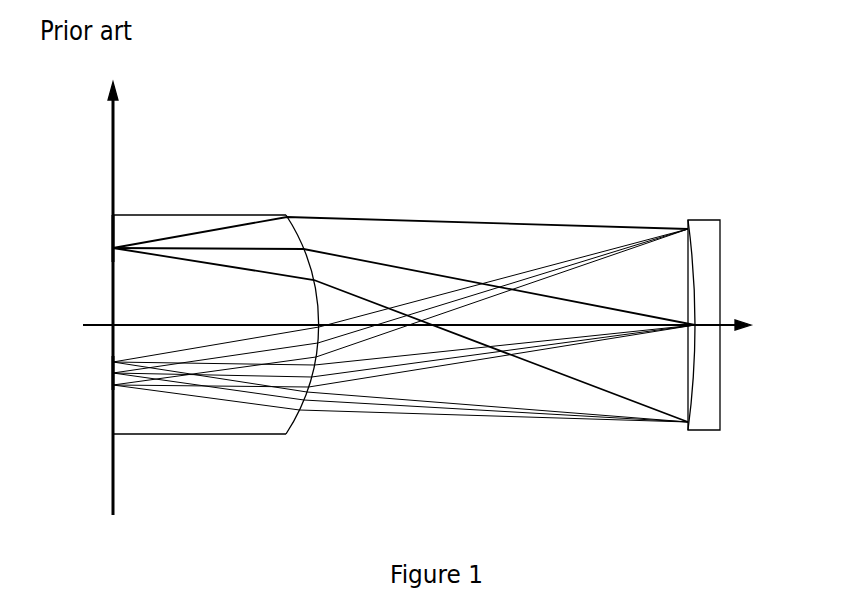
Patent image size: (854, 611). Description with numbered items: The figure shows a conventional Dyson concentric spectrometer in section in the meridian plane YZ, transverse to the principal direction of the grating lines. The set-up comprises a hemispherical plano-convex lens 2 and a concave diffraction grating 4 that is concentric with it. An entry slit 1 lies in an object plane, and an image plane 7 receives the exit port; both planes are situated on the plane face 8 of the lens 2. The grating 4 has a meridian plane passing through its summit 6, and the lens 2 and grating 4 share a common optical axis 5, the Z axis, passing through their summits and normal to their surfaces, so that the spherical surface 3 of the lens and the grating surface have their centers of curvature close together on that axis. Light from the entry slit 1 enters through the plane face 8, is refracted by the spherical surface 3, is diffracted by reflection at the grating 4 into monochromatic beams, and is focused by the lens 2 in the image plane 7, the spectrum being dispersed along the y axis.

The entry slit 1 is at (113, 258).
The plano-convex lens 2 is at (237, 271).
The spherical surface 3 is at (291, 216).
The concave diffraction grating 4 is at (690, 259).
The optical axis 5 is at (728, 327).
The summit 6 is at (693, 333).
The image plane 7 is at (113, 373).
The plane face 8 is at (113, 289).